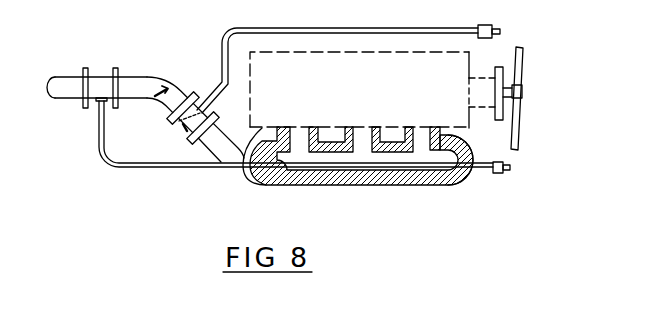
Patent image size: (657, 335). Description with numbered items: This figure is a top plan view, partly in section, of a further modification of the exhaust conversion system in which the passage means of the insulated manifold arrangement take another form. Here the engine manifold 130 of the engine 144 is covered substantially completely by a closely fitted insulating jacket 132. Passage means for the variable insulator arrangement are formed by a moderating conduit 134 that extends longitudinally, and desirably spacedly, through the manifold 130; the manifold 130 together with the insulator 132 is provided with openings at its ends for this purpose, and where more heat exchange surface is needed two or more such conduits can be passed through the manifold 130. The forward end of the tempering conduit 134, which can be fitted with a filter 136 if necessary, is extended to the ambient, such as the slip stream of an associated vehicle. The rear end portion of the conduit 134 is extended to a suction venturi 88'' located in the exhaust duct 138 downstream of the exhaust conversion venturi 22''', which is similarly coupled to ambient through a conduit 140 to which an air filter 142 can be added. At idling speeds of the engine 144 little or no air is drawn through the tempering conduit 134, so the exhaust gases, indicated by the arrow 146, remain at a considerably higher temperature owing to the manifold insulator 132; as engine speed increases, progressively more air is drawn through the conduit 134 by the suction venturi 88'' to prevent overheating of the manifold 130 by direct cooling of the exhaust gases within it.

The suction venturi 88'' is at (97, 69).
The exhaust duct 138 is at (152, 77).
The exhaust gases arrow 146 is at (160, 100).
The exhaust conversion venturi 22''' is at (194, 144).
The conduit 140 is at (417, 28).
The air filter 142 is at (487, 25).
The engine 144 is at (470, 63).
The engine manifold 130 is at (383, 177).
The insulating jacket 132 is at (433, 187).
The moderating conduit 134 is at (290, 170).
The filter 136 is at (496, 175).